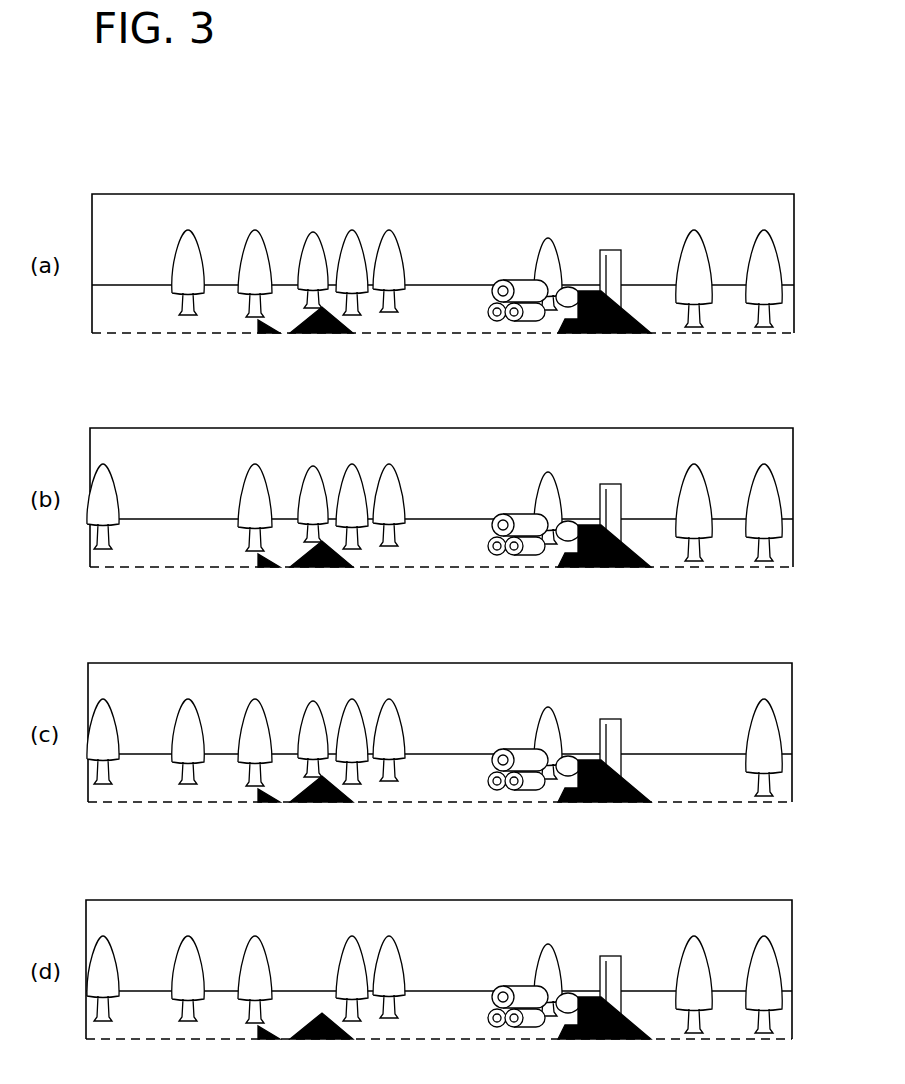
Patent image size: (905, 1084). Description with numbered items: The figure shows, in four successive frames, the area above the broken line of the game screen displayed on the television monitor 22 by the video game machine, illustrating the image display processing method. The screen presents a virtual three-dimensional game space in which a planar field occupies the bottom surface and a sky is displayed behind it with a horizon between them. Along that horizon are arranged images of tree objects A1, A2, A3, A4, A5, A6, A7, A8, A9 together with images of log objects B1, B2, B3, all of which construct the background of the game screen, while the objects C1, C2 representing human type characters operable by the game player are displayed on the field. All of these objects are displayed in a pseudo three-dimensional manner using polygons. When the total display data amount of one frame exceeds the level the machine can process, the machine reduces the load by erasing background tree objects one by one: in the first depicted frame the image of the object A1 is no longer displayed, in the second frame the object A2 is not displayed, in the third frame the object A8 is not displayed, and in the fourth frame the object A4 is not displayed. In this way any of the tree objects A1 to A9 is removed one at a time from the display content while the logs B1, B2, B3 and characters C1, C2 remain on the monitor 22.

The television monitor 22 is at (794, 268).
The object representing a tree A1 is at (104, 476).
The object representing a tree A2 is at (189, 242).
The object representing a tree A3 is at (256, 242).
The object representing a tree A4 is at (314, 244).
The object representing a tree A5 is at (353, 242).
The object representing a tree A6 is at (390, 242).
The object representing a tree A7 is at (549, 250).
The object representing a tree A8 is at (695, 242).
The object representing a tree A9 is at (765, 242).
The object representing logs B1 is at (501, 281).
The object representing logs B2 is at (583, 289).
The object representing logs B3 is at (622, 256).
The object representing a human type character C1 is at (322, 335).
The object representing a human type character C2 is at (598, 335).